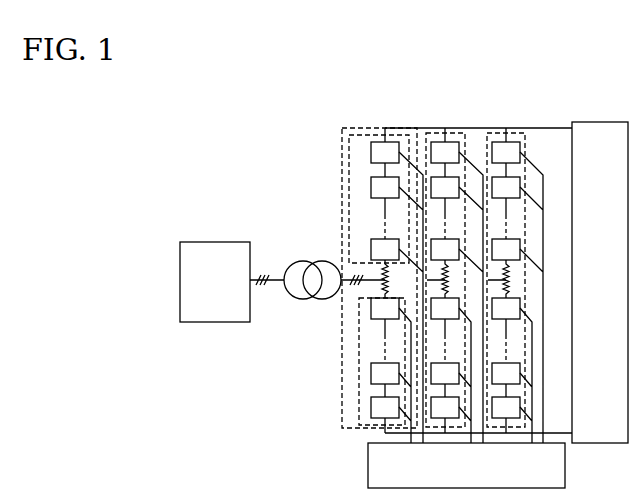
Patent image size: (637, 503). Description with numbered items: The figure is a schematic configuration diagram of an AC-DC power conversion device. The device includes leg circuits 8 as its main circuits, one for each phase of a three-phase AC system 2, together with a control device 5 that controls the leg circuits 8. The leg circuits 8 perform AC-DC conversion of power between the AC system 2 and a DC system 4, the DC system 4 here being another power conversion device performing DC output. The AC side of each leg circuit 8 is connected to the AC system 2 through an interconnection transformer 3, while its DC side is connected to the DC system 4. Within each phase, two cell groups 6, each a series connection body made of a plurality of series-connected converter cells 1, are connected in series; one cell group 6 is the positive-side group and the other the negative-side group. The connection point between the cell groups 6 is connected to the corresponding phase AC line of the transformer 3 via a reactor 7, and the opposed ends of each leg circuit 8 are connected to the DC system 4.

The converter cell 1 is at (371, 152).
The AC system 2 is at (215, 242).
The interconnection transformer 3 is at (300, 262).
The DC system 4 is at (593, 122).
The control device 5 is at (368, 465).
The cell group 6 is at (349, 197).
The reactor 7 is at (385, 272).
The leg circuit 8 is at (370, 127).